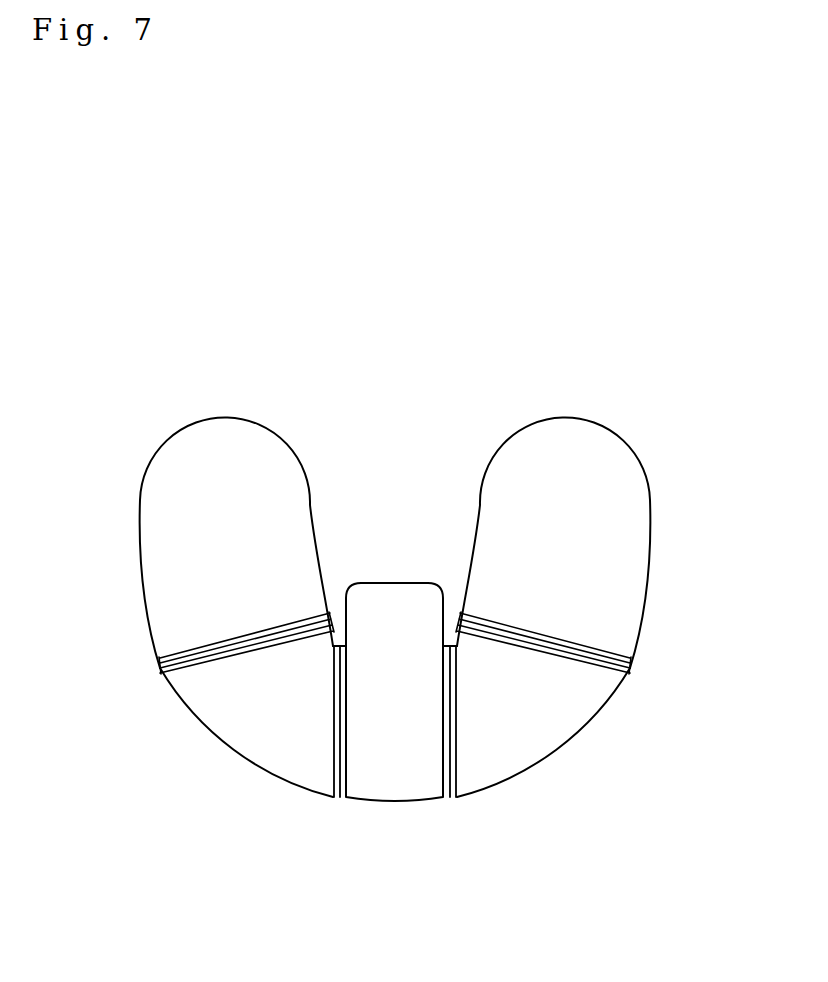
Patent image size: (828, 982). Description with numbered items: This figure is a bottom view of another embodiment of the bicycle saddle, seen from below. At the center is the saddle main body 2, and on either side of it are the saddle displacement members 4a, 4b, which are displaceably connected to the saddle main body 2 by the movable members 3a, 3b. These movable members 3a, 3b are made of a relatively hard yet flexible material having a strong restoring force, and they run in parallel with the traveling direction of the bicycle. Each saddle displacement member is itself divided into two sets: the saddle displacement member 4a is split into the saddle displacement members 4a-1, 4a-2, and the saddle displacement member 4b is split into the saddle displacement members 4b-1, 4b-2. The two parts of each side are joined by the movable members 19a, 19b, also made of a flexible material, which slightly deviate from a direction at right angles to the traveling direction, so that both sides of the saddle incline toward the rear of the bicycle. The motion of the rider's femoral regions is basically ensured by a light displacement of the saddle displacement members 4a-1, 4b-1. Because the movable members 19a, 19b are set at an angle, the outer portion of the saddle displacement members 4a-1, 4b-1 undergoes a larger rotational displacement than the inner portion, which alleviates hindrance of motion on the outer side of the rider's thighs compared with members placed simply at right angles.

The saddle main body 2 is at (393, 768).
The movable member 3a is at (333, 799).
The movable member 3b is at (457, 799).
The saddle displacement member 4a is at (191, 611).
The saddle displacement member 4a-1 is at (152, 525).
The saddle displacement member 4a-2 is at (225, 718).
The saddle displacement member 4b is at (605, 616).
The saddle displacement member 4b-1 is at (625, 545).
The saddle displacement member 4b-2 is at (563, 722).
The movable member 19a is at (158, 667).
The movable member 19b is at (632, 674).